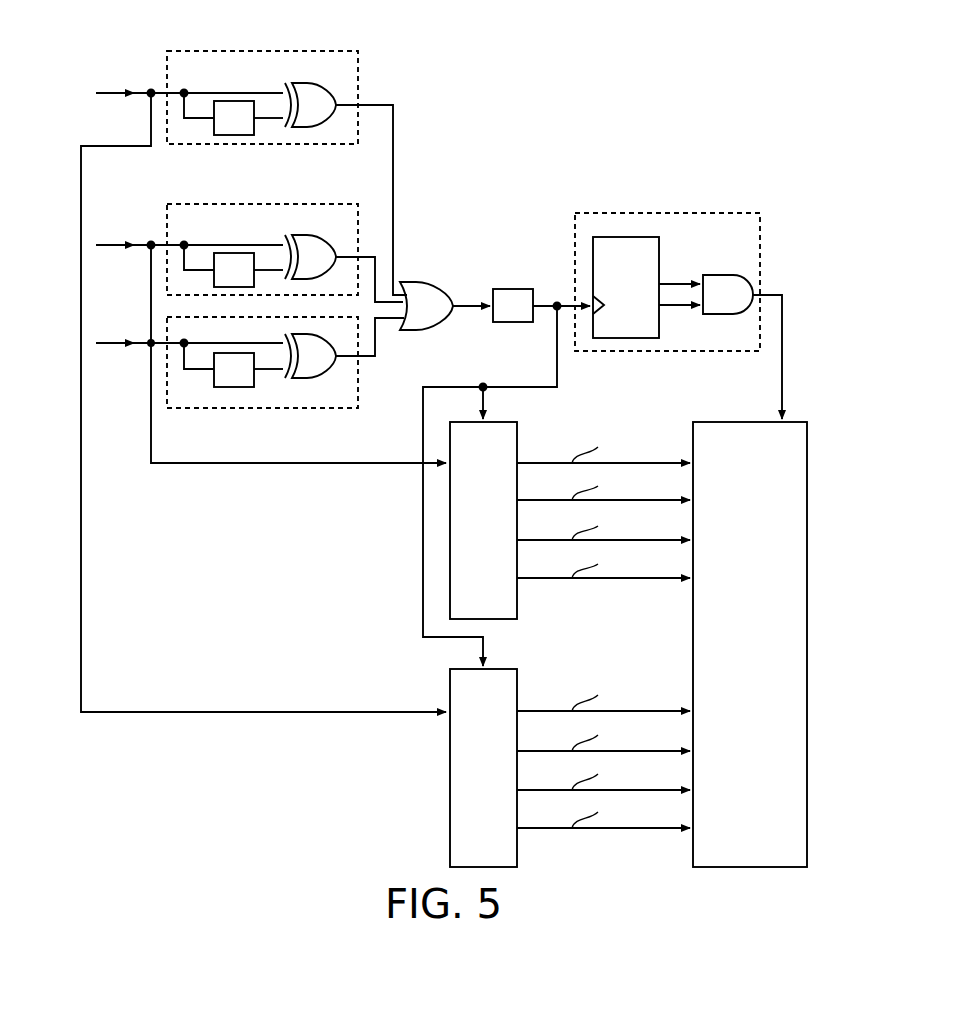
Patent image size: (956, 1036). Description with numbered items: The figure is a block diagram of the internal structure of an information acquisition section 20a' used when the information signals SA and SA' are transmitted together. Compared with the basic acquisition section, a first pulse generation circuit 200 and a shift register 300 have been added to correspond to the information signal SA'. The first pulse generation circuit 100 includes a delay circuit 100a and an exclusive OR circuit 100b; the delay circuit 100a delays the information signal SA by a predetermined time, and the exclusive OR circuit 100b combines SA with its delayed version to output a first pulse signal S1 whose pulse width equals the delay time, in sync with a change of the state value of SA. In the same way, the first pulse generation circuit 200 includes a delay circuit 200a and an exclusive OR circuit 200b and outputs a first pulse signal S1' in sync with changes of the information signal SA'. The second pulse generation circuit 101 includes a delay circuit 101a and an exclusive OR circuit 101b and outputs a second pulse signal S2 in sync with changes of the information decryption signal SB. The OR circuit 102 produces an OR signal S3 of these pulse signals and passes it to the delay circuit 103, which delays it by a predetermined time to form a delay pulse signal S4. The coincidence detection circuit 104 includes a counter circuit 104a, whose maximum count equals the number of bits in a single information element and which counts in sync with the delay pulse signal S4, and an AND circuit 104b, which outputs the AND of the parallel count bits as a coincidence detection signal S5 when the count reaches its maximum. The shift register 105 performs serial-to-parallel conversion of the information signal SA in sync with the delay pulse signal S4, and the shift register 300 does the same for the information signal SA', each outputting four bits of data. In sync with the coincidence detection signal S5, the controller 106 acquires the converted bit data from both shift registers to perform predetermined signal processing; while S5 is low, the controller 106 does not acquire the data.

The first pulse generation circuit 200 is at (343, 51).
The delay circuit 200a is at (235, 100).
The exclusive OR circuit 200b is at (305, 82).
The first pulse generation circuit 100 is at (345, 204).
The delay circuit 100a is at (235, 253).
The exclusive OR circuit 100b is at (305, 234).
The second pulse generation circuit 101 is at (193, 410).
The delay circuit 101a is at (232, 388).
The exclusive OR circuit 101b is at (305, 383).
The OR circuit 102 is at (422, 280).
The delay circuit 103 is at (505, 288).
The coincidence detection circuit 104 is at (733, 212).
The counter circuit 104a is at (618, 237).
The AND circuit 104b is at (717, 275).
The shift register 105 is at (518, 600).
The controller 106 is at (693, 857).
The shift register 300 is at (518, 850).
The information acquisition section 20a' is at (279, 814).
The information signal SA' is at (263, 377).
The information signal SA is at (267, 330).
The information decryption signal SB is at (110, 341).
The first pulse signal S1' is at (371, 177).
The first pulse signal S1 is at (369, 257).
The second pulse signal S2 is at (377, 350).
The OR signal S3 is at (470, 308).
The delay pulse signal S4 is at (547, 297).
The coincidence detection signal S5 is at (782, 385).